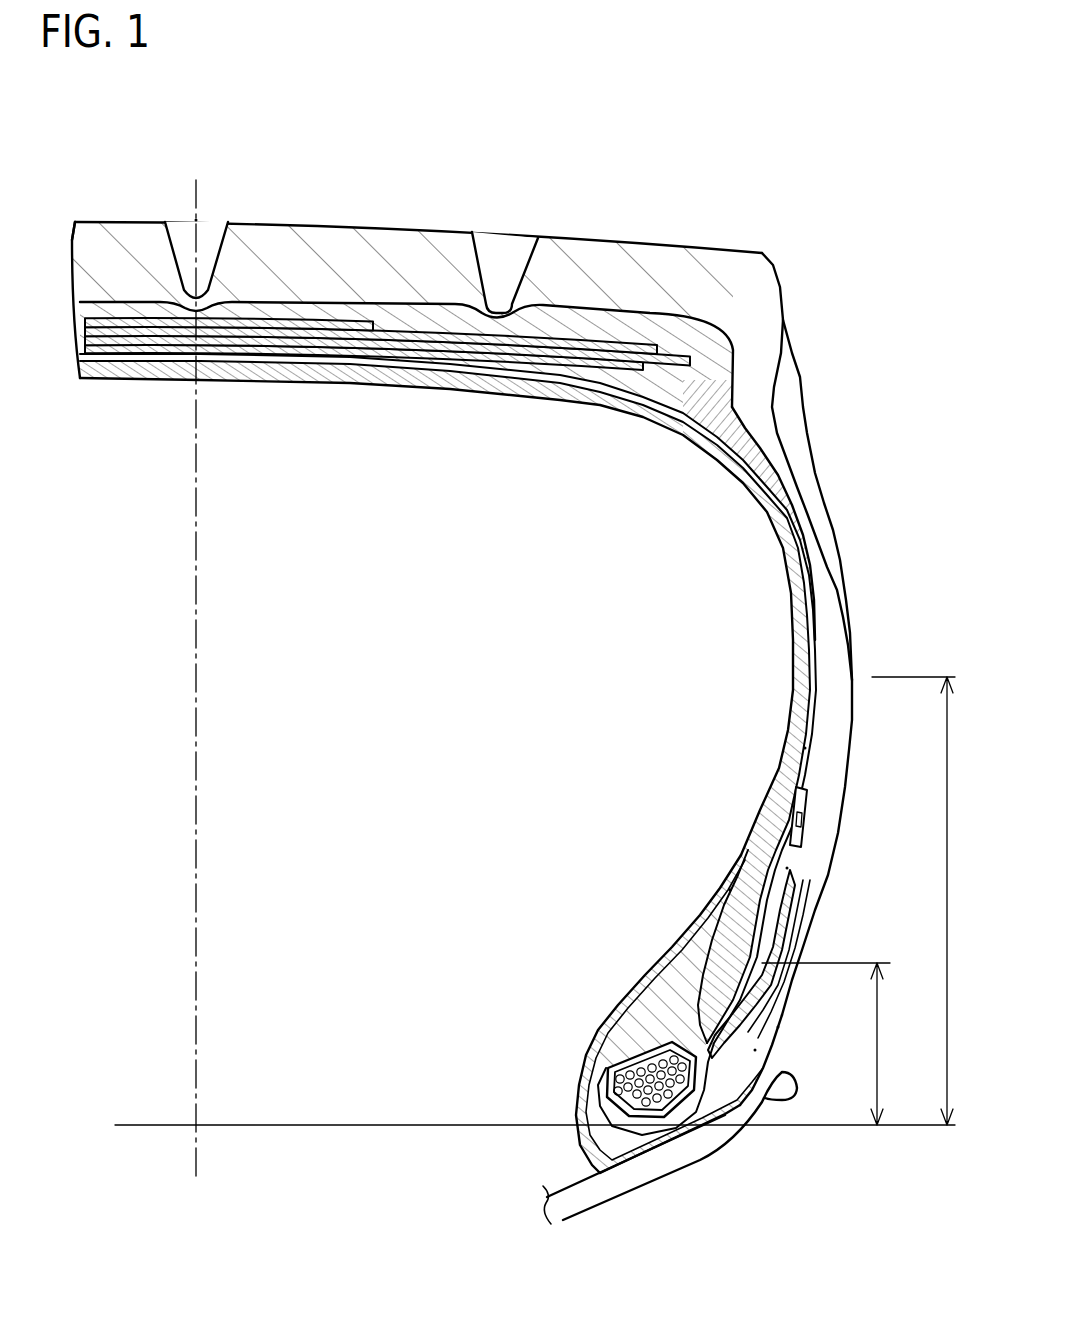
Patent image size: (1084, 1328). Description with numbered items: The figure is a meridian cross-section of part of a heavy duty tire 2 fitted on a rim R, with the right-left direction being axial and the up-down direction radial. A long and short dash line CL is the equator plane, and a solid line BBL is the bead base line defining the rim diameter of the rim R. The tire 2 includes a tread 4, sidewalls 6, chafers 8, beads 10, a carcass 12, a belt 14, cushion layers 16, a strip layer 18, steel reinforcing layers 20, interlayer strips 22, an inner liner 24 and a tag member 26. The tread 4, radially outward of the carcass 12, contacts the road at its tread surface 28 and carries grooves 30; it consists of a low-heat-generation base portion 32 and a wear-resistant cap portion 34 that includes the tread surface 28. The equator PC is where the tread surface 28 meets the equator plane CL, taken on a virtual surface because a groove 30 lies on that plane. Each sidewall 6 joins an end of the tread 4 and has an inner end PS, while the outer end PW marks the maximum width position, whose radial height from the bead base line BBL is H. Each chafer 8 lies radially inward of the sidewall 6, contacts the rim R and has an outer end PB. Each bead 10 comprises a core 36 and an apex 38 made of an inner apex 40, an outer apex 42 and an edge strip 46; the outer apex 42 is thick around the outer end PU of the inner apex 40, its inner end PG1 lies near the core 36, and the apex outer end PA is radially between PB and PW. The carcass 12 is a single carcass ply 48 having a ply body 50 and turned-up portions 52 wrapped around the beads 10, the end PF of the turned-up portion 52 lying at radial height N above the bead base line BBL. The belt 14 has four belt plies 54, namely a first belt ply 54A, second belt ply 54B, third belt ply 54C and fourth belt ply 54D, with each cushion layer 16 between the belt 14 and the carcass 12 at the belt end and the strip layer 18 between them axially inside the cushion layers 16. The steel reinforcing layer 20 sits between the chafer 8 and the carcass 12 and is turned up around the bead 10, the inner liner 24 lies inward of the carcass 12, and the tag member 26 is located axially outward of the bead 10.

The heavy duty tire 2 is at (818, 195).
The tread 4 is at (498, 608).
The sidewall 6 is at (863, 586).
The chafer 8 is at (722, 1092).
The bead 10 is at (575, 1050).
The carcass 12 is at (448, 744).
The belt 14 is at (387, 414).
The cushion layer 16 is at (690, 402).
The strip layer 18 is at (450, 368).
The steel reinforcing layer 20 is at (597, 1092).
The interlayer strip 22 is at (778, 937).
The inner liner 24 is at (631, 426).
The tag member 26 is at (816, 820).
The tread surface 28 is at (328, 220).
The groove 30 is at (213, 247).
The base portion 32 is at (398, 312).
The cap portion 34 is at (113, 250).
The core 36 is at (627, 1048).
The apex 38 is at (626, 993).
The inner apex 40 is at (683, 980).
The outer apex 42 is at (752, 862).
The edge strip 46 is at (784, 915).
The carcass ply 48 is at (153, 376).
The ply body 50 is at (808, 645).
The turned-up portion 52 is at (752, 983).
The belt ply 54 is at (387, 394).
The first belt ply 54A is at (233, 352).
The second belt ply 54B is at (288, 342).
The third belt ply 54C is at (323, 334).
The fourth belt ply 54D is at (352, 325).
The equator PC is at (195, 217).
The equator plane CL is at (194, 677).
The outer end (maximum width position) PW is at (854, 679).
The outer end of the apex PA is at (806, 748).
The outer end of the chafer PB is at (787, 868).
The outer end of the inner apex PU is at (730, 890).
The end of the turned-up portion PF is at (766, 960).
The inner end of the sidewall PS is at (778, 1027).
The inner end of the outer apex PG1 is at (755, 1050).
The bead base line BBL is at (322, 1122).
The radial height of the maximum width position H is at (953, 901).
The radial height of the end of the turned-up portion N is at (884, 1044).
The rim R is at (677, 1183).